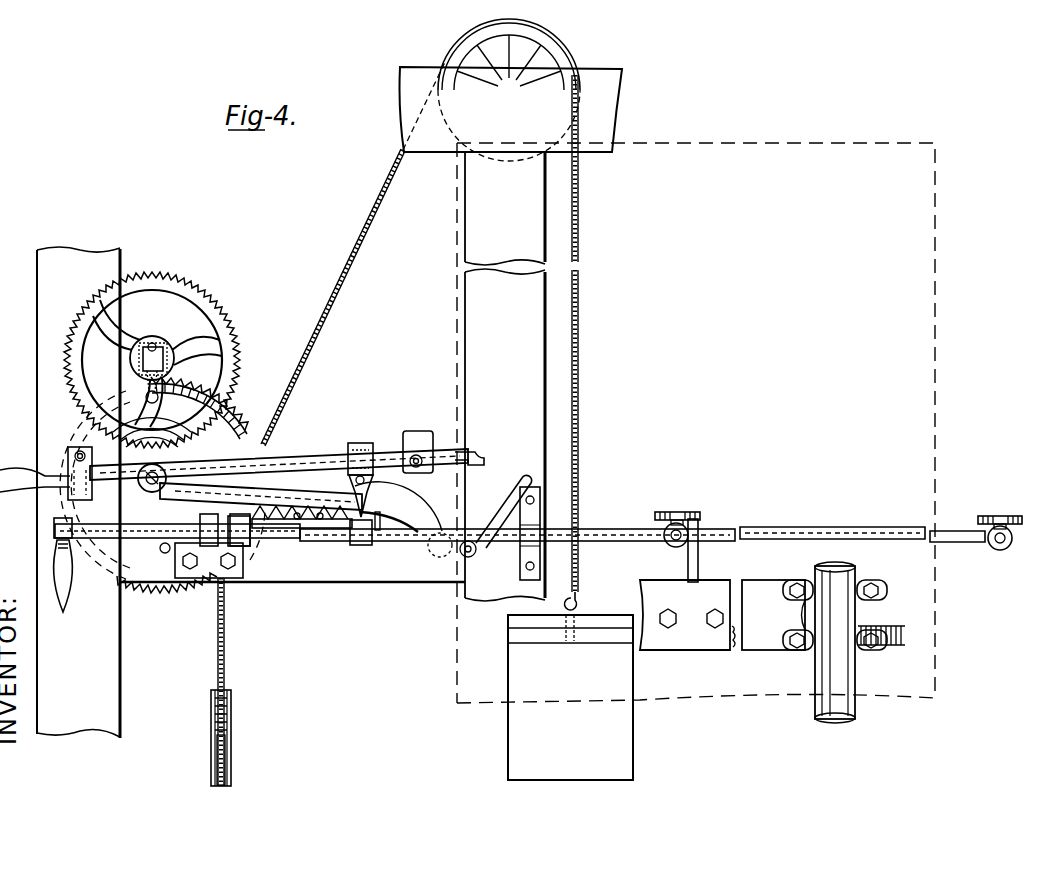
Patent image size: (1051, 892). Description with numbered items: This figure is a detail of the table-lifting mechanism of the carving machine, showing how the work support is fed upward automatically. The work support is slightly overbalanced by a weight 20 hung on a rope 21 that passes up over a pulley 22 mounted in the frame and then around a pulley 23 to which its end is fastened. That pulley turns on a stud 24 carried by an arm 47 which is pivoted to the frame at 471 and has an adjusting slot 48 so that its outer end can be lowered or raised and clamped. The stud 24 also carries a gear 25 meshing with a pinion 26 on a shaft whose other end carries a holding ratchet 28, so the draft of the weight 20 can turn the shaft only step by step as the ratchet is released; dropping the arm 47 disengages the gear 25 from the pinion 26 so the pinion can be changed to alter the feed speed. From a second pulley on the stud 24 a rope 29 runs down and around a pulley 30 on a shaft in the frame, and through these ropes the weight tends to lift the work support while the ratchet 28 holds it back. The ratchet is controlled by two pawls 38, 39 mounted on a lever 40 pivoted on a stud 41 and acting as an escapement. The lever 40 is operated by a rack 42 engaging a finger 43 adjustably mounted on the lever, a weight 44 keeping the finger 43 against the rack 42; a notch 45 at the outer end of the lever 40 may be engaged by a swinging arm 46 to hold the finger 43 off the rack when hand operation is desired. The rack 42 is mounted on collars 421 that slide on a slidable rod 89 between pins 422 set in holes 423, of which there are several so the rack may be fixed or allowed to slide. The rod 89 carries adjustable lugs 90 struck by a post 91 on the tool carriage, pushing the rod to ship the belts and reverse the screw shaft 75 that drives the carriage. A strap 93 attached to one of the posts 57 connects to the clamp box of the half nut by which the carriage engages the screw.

The weight 20 is at (570, 697).
The rope 21 is at (580, 244).
The pulley 22 is at (570, 62).
The pulley 23 is at (236, 402).
The stud 24 is at (145, 580).
The gear 25 is at (240, 416).
The pinion 26 is at (166, 360).
The holding ratchet 28 is at (238, 346).
The rope 29 is at (226, 648).
The pulley 30 is at (232, 710).
The pawl 38 is at (232, 430).
The pawl 39 is at (95, 445).
The lever 40 is at (328, 453).
The stud 41 is at (150, 480).
The rack 42 is at (322, 526).
The finger 43 is at (370, 452).
The weight 44 is at (416, 432).
The notch 45 is at (472, 452).
The swinging arm 46 is at (480, 512).
The arm 47 is at (414, 512).
The adjusting slot 48 is at (68, 462).
The post 57 is at (855, 675).
The screw shaft 75 is at (900, 630).
The slidable rod 89 is at (614, 530).
The adjustable lug 90 is at (694, 514).
The post 91 is at (699, 566).
The strap 93 is at (763, 615).
The collar 421 is at (250, 546).
The pin 422 is at (412, 508).
The hole 423 is at (162, 549).
The pivot 471 is at (440, 558).